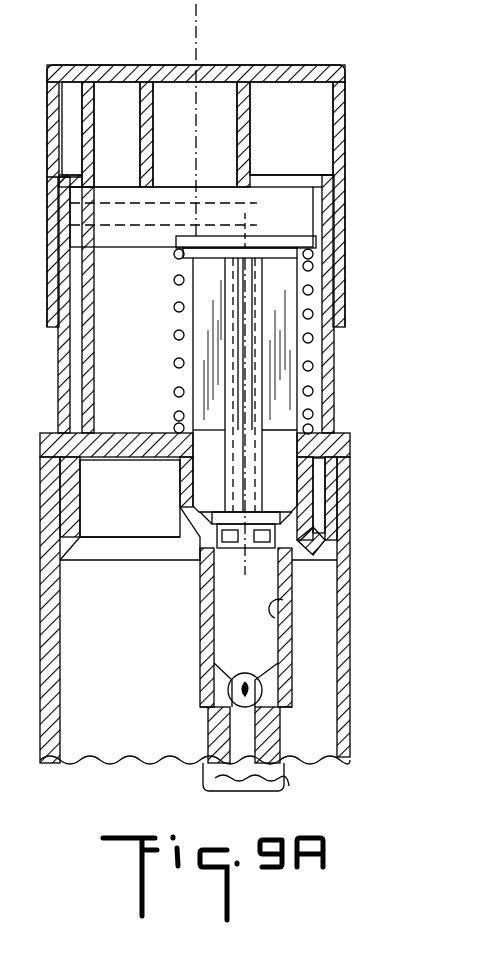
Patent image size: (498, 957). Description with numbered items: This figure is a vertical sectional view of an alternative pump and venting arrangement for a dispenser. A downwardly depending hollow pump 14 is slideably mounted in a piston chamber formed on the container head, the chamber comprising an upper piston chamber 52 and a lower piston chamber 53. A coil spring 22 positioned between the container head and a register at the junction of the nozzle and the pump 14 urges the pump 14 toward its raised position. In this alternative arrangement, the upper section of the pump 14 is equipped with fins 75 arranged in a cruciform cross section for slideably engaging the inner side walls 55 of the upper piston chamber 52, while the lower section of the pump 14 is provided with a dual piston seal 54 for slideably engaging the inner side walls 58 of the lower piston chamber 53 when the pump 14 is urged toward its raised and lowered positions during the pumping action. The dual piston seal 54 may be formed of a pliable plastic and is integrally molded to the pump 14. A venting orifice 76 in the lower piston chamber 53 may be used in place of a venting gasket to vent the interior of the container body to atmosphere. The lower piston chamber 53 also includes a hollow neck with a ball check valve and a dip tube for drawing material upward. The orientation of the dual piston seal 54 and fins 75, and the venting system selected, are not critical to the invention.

The pump 14 is at (165, 479).
The coil spring 22 is at (174, 283).
The fins 75 is at (238, 317).
The inner side walls 55 is at (178, 377).
The upper piston chamber 52 is at (282, 450).
The dual piston seal 54 is at (204, 534).
The lower piston chamber 53 is at (232, 620).
The venting orifice 76 is at (297, 562).
The inner side walls 58 is at (265, 617).